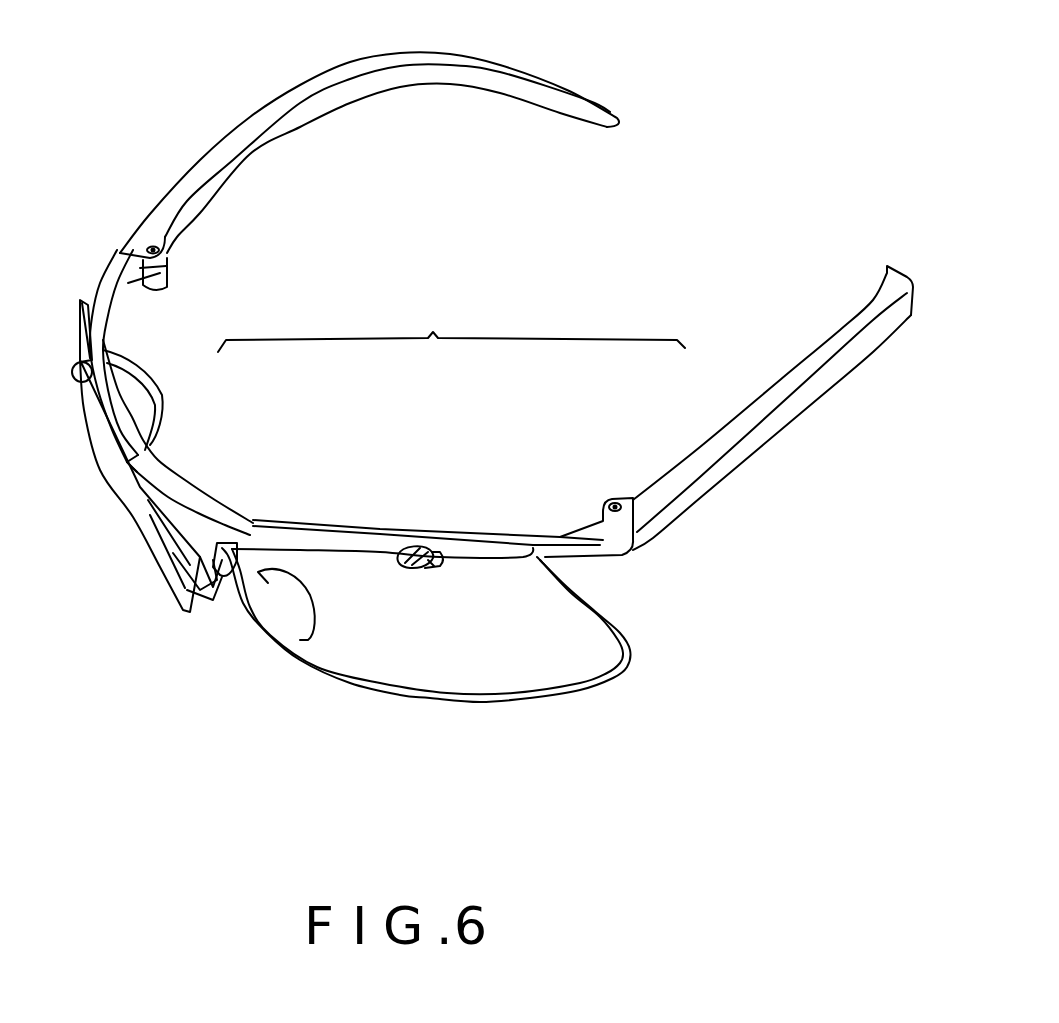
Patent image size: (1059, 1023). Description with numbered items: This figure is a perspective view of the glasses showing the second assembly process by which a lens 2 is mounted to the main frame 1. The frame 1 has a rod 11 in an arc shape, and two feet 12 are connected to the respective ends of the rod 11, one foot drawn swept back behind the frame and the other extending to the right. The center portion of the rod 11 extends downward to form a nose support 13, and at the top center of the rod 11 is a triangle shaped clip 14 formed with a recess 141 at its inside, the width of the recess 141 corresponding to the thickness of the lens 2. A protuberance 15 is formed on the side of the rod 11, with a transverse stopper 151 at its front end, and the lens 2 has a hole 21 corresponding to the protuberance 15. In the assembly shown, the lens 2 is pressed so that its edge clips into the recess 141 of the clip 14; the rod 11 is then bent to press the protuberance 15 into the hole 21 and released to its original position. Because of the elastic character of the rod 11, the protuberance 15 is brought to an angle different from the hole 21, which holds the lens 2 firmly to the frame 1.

The main frame 1 is at (451, 422).
The rod 11 is at (584, 540).
The feet 12 is at (747, 447).
The nose support 13 is at (228, 545).
The triangle shaped clip 14 is at (190, 505).
The recess 141 is at (247, 527).
The protuberance 15 is at (408, 560).
The transverse stopper 151 is at (402, 560).
The lens 2 is at (528, 680).
The hole 21 is at (433, 566).